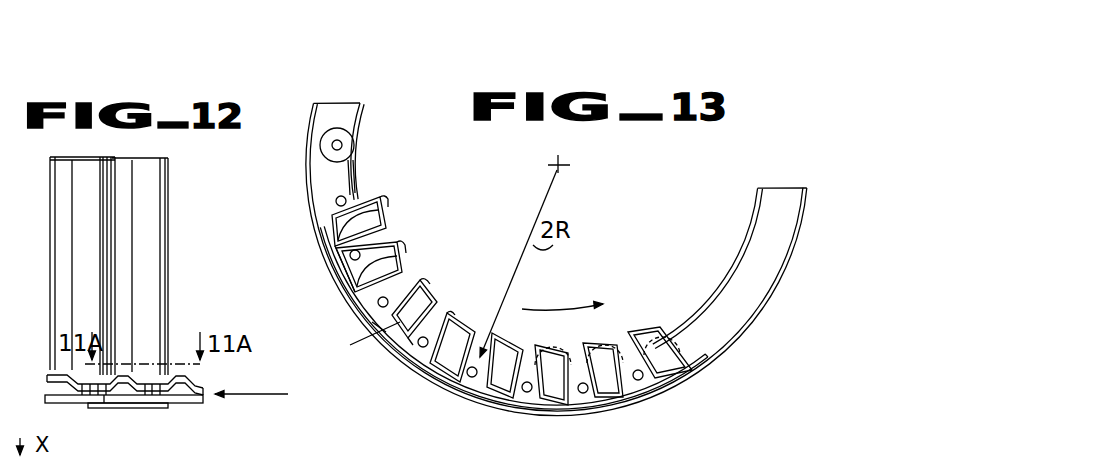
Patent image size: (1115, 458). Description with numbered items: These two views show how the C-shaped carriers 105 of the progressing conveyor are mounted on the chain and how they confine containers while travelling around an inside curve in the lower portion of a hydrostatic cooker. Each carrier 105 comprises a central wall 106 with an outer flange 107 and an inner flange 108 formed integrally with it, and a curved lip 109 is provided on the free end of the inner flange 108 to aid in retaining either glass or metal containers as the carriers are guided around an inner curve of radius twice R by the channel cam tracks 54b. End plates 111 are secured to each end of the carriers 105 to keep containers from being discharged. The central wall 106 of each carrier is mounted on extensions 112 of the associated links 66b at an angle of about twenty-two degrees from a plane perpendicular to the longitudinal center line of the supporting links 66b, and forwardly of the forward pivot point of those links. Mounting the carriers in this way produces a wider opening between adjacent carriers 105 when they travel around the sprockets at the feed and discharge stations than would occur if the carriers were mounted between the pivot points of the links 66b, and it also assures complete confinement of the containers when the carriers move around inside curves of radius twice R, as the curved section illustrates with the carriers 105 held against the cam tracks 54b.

In FIG. 12, the C-shaped carrier 105 is at (100, 268).
In FIG. 13, the C-shaped carrier 105 is at (397, 223).
In FIG. 13, the central wall 106 is at (336, 203).
In FIG. 12, the outer flange 107 is at (88, 160).
In FIG. 13, the outer flange 107 is at (386, 200).
In FIG. 12, the inner flange 108 is at (123, 205).
In FIG. 13, the inner flange 108 is at (384, 348).
In FIG. 12, the curved lip 109 is at (112, 228).
In FIG. 13, the curved lip 109 is at (372, 322).
In FIG. 13, the end plate 111 is at (352, 344).
In FIG. 12, the extension 112 is at (107, 378).
In FIG. 12, the link 66b is at (203, 386).
In FIG. 13, the link 66b is at (345, 175).
In FIG. 13, the channel cam track 54b is at (762, 232).